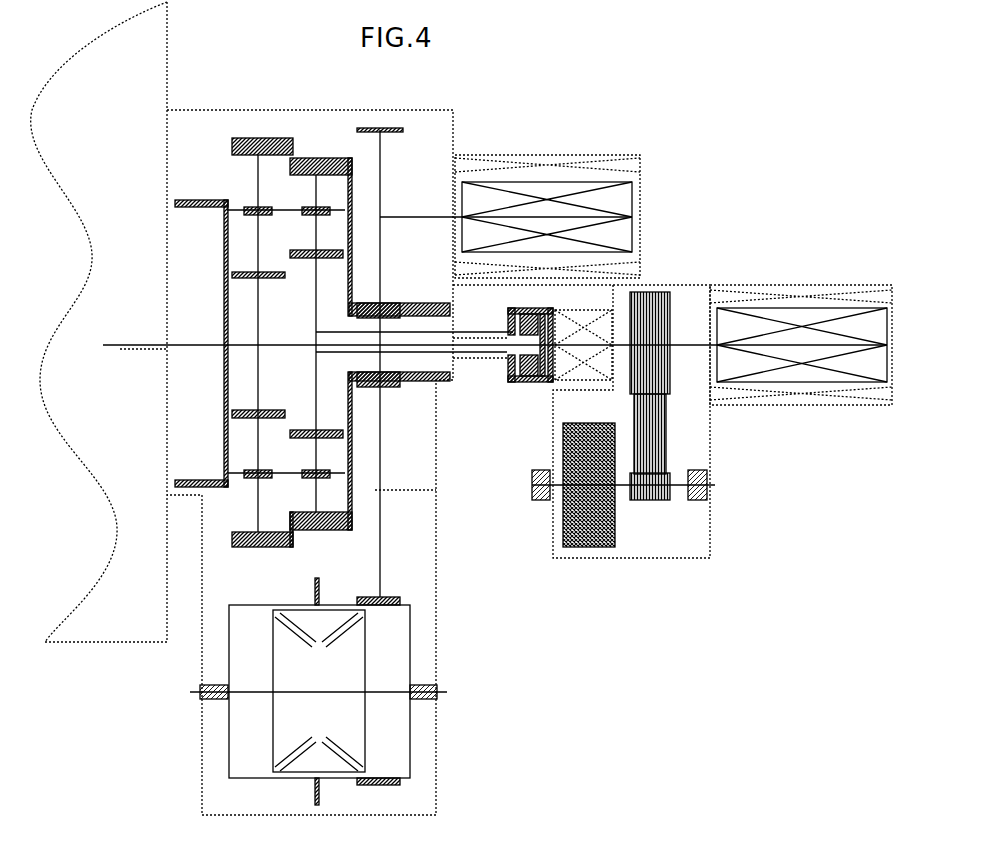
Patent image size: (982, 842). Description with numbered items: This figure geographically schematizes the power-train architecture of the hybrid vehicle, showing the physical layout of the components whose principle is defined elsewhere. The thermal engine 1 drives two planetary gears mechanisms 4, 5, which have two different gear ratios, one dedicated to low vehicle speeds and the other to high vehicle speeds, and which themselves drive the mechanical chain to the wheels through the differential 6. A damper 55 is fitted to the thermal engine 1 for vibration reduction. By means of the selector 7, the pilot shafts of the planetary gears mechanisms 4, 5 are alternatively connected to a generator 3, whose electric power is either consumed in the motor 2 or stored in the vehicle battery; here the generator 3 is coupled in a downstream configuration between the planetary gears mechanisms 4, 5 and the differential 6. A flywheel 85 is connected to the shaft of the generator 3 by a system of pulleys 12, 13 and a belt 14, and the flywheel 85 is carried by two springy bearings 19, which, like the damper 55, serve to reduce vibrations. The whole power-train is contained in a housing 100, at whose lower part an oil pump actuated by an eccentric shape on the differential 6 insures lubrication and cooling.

The thermal engine 1 is at (118, 642).
The damper 55 is at (197, 484).
The motor 2 is at (608, 155).
The generator 3 is at (750, 285).
The planetary gears mechanism 4 is at (258, 462).
The planetary gears mechanism 5 is at (316, 452).
The differential 6 is at (410, 637).
The housing 100 is at (349, 691).
The selector 7 is at (512, 382).
The pulley 12 is at (672, 383).
The pulley 13 is at (668, 500).
The belt 14 is at (677, 495).
The springy bearings 19 is at (543, 502).
The flywheel 85 is at (603, 547).